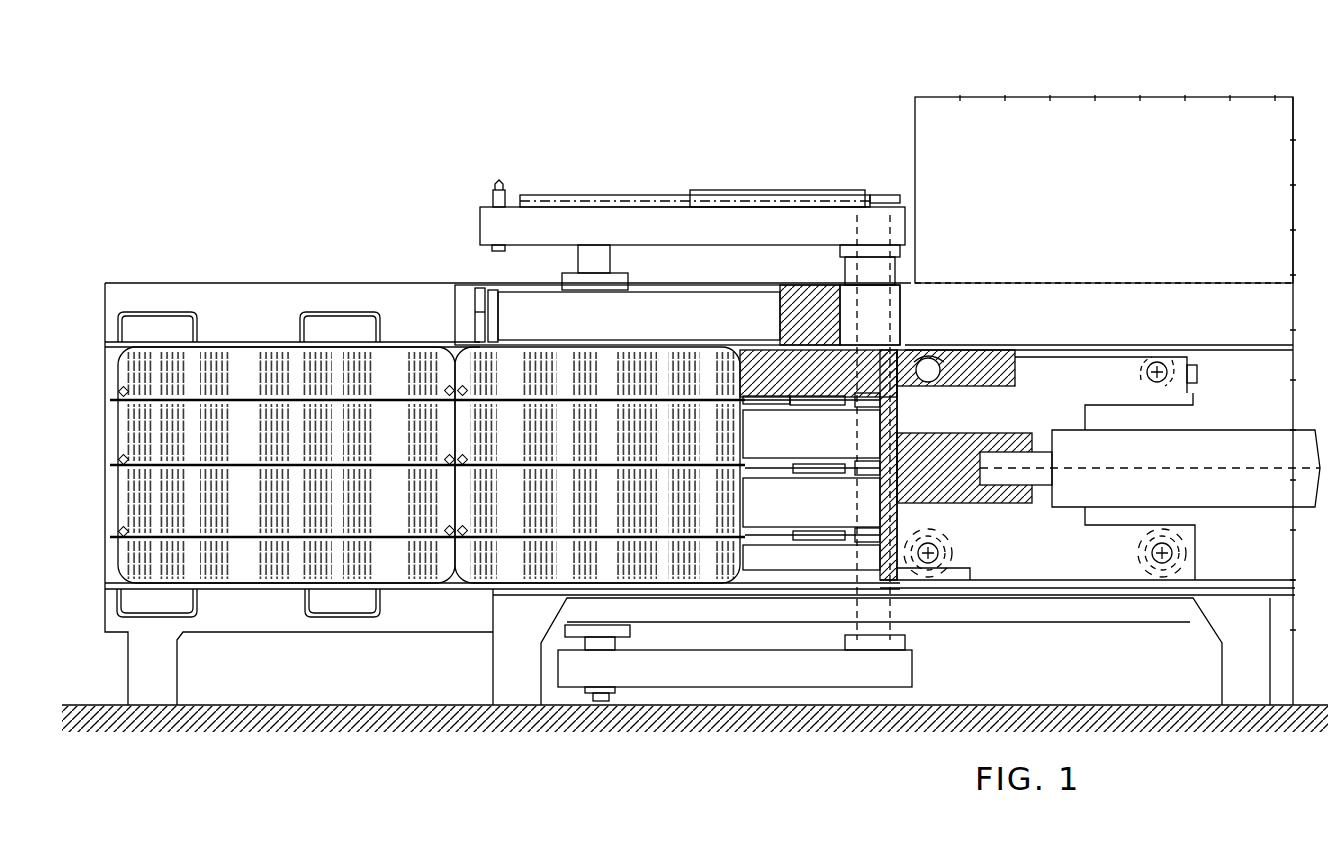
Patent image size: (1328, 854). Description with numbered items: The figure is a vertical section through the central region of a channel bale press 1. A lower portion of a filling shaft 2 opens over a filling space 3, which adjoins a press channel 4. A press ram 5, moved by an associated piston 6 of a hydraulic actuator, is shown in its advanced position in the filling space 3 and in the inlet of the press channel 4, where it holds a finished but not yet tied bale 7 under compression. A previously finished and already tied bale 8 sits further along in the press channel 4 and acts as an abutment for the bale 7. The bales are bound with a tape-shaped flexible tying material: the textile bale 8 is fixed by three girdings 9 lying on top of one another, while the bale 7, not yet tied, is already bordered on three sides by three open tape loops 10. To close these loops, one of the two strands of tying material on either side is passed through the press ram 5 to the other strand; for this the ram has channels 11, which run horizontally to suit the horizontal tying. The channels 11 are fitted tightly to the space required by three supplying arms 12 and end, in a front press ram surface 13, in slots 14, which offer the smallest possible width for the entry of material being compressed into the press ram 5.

The channel bale press 1 is at (286, 118).
The filling shaft 2 is at (1058, 203).
The filling space 3 is at (1260, 404).
The press channel 4 is at (255, 322).
The press ram 5 is at (960, 408).
The piston 6 is at (1170, 483).
The bale 7 is at (640, 446).
The tied bale 8 is at (318, 450).
The girdings 9 is at (240, 400).
The open tape loops 10 is at (573, 400).
The channels 11 is at (763, 400).
The supplying arms 12 is at (823, 402).
The front press ram surface 13 is at (745, 567).
The slots 14 is at (745, 403).